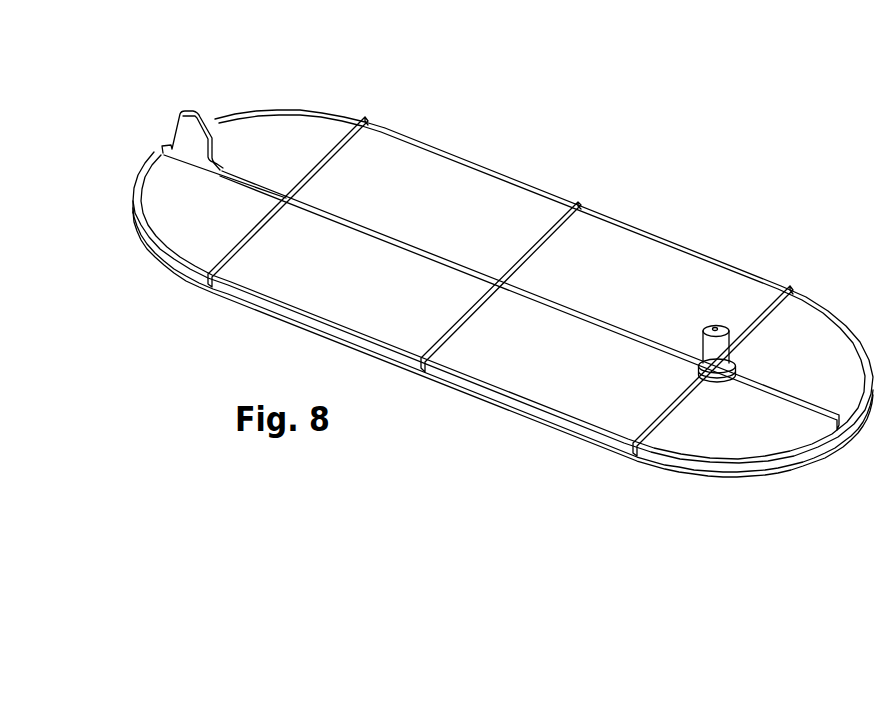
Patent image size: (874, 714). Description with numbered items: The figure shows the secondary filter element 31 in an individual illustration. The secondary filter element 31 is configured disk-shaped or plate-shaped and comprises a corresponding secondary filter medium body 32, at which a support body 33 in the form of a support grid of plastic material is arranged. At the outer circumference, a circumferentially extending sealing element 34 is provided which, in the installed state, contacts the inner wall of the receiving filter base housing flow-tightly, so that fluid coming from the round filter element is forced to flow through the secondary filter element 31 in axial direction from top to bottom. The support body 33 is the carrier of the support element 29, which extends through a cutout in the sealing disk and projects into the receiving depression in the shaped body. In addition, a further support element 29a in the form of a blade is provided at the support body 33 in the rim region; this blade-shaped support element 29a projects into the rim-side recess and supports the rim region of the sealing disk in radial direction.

The support element 29 is at (711, 331).
The blade-shaped support element 29a is at (193, 114).
The secondary filter element 31 is at (503, 296).
The secondary filter medium body 32 is at (634, 259).
The support body 33 is at (617, 333).
The sealing element 34 is at (710, 466).